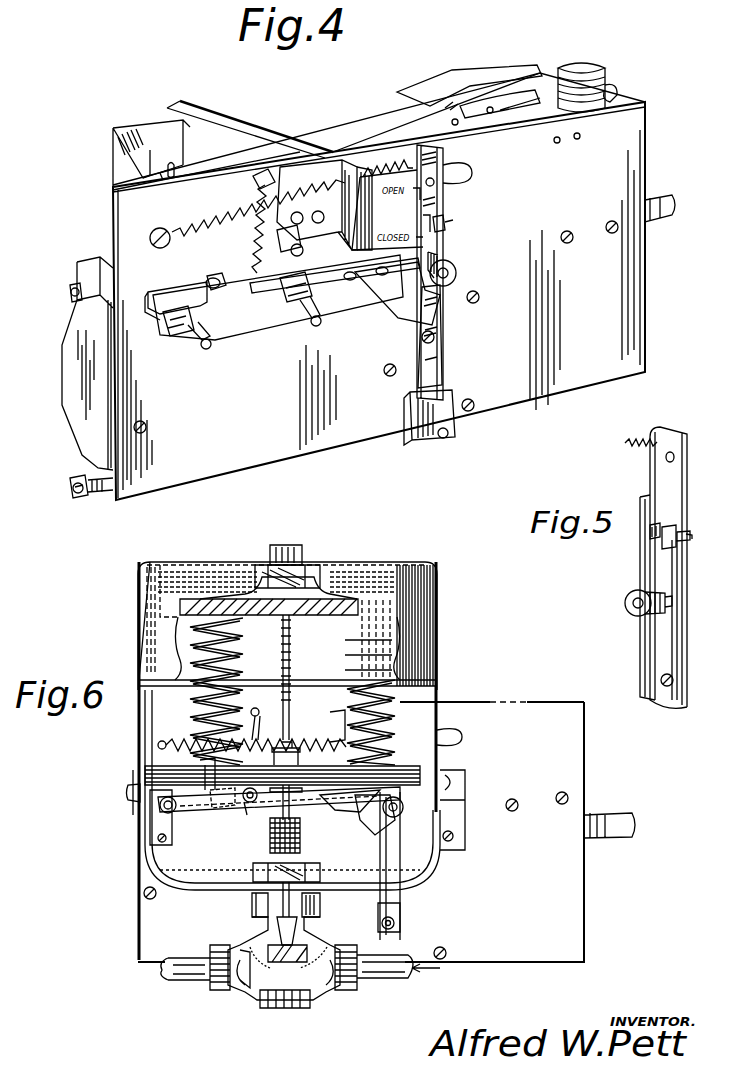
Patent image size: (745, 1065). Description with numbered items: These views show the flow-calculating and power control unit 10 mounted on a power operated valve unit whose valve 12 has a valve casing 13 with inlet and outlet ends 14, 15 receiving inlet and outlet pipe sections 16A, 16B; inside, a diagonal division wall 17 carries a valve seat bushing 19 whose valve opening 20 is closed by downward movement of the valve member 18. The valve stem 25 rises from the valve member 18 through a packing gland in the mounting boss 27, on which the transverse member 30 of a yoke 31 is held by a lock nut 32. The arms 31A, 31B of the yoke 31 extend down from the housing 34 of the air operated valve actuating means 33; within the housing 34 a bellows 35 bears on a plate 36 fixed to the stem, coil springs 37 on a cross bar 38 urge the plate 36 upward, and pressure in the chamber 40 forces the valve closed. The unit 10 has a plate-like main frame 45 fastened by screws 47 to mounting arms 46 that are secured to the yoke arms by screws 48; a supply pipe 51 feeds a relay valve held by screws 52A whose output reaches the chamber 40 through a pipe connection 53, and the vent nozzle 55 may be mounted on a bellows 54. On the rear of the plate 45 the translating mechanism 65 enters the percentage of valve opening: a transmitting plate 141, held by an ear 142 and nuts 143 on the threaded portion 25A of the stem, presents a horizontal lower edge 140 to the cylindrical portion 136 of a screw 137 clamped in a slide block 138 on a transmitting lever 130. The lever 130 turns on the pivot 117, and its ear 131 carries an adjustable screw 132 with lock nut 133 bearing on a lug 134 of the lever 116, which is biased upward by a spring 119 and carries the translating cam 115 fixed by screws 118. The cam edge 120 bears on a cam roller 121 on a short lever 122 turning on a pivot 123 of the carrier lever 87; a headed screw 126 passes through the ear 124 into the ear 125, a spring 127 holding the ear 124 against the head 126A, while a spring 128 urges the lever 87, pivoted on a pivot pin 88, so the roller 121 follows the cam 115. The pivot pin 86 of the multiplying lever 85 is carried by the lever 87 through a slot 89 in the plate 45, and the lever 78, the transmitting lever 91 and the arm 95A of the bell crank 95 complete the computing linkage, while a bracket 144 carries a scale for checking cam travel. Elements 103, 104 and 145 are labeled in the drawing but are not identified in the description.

In FIG. 4, the flow-calculating and power control unit 10 is at (655, 92).
In FIG. 6, the flow-calculating and power control unit 10 is at (470, 698).
In FIG. 6, the valve 12 is at (233, 938).
In FIG. 6, the valve casing 13 is at (244, 975).
In FIG. 6, the inlet end 14 is at (340, 992).
In FIG. 6, the outlet end 15 is at (218, 992).
In FIG. 6, the inlet section of pipe line 16A is at (395, 980).
In FIG. 6, the outlet section of pipe line 16B is at (182, 982).
In FIG. 6, the division wall 17 is at (325, 946).
In FIG. 6, the valve member 18 is at (317, 935).
In FIG. 6, the valve seat bushing 19 is at (272, 962).
In FIG. 6, the valve opening 20 is at (290, 962).
In FIG. 6, the valve stem 25 is at (300, 890).
In FIG. 6, the threaded portion of valve stem 25A is at (290, 645).
In FIG. 6, the mounting boss 27 is at (252, 905).
In FIG. 6, the transverse member of yoke 30 is at (200, 882).
In FIG. 6, the yoke 31 is at (137, 862).
In FIG. 6, the arm of yoke 31A is at (137, 728).
In FIG. 6, the arm of yoke 31B is at (440, 737).
In FIG. 6, the lock nut 32 is at (302, 865).
In FIG. 6, the valve actuating means 33 is at (432, 556).
In FIG. 6, the housing 34 is at (418, 632).
In FIG. 6, the extensible bellows 35 is at (262, 565).
In FIG. 6, the plate 36 is at (266, 616).
In FIG. 6, the expansive coil springs 37 is at (232, 650).
In FIG. 6, the cross bar 38 is at (155, 768).
In FIG. 6, the chamber 40 is at (285, 585).
In FIG. 4, the main frame 45 is at (625, 295).
In FIG. 6, the main frame 45 is at (573, 752).
In FIG. 6, the mounting arms 46 is at (130, 810).
In FIG. 6, the screws 47 is at (166, 842).
In FIG. 6, the screws 48 is at (126, 794).
In FIG. 4, the supply pipe 51 is at (660, 198).
In FIG. 4, the screws 52A is at (568, 243).
In FIG. 6, the screws 52A is at (514, 811).
In FIG. 6, the pipe connection 53 is at (290, 545).
In FIG. 4, the bellows 54 is at (577, 64).
In FIG. 4, the vent nozzle 55 is at (617, 95).
In FIG. 4, the translating mechanism 65 is at (360, 320).
In FIG. 4, the lever 78 is at (195, 168).
In FIG. 4, the multiplying lever 85 is at (397, 128).
In FIG. 4, the pivot pin 86 is at (434, 183).
In FIG. 5, the pivot pin 86 is at (675, 457).
In FIG. 4, the carrier lever 87 is at (452, 154).
In FIG. 5, the carrier lever 87 is at (672, 475).
In FIG. 6, the carrier lever 87 is at (400, 897).
In FIG. 4, the pivot pin 88 is at (457, 434).
In FIG. 6, the pivot pin 88 is at (397, 922).
In FIG. 4, the slot 89 is at (474, 170).
In FIG. 6, the slot 89 is at (464, 735).
In FIG. 4, the transmitting lever 91 is at (475, 95).
In FIG. 4, the bell crank 95 is at (444, 127).
In FIG. 4, the arm of bell crank 95A is at (497, 103).
In FIG. 4, the box 103 is at (148, 124).
In FIG. 4, the box wall 104 is at (125, 163).
In FIG. 4, the translating cam 115 is at (405, 302).
In FIG. 6, the translating cam 115 is at (368, 822).
In FIG. 4, the lever 116 is at (308, 272).
In FIG. 6, the lever 116 is at (350, 802).
In FIG. 4, the pivot 117 is at (182, 338).
In FIG. 4, the screws 118 is at (387, 270).
In FIG. 4, the spring 119 is at (253, 237).
In FIG. 6, the spring 119 is at (256, 708).
In FIG. 4, the cam edge 120 is at (443, 300).
In FIG. 6, the cam edge 120 is at (385, 818).
In FIG. 4, the cam roller 121 is at (455, 264).
In FIG. 5, the cam roller 121 is at (635, 617).
In FIG. 5, the short lever 122 is at (672, 632).
In FIG. 5, the pivot 123 is at (675, 680).
In FIG. 5, the ear 124 is at (680, 527).
In FIG. 5, the ear 125 is at (645, 542).
In FIG. 5, the headed screw 126 is at (692, 533).
In FIG. 5, the head of screw 126A is at (690, 541).
In FIG. 5, the spring 127 is at (660, 525).
In FIG. 4, the spring 128 is at (202, 225).
In FIG. 5, the spring 128 is at (632, 447).
In FIG. 6, the spring 128 is at (184, 740).
In FIG. 4, the transmitting lever 130 is at (258, 325).
In FIG. 6, the transmitting lever 130 is at (236, 812).
In FIG. 4, the ear 131 is at (222, 300).
In FIG. 6, the ear 131 is at (202, 763).
In FIG. 4, the adjustable screw 132 is at (212, 272).
In FIG. 6, the adjustable screw 132 is at (212, 812).
In FIG. 4, the lock nut 133 is at (206, 282).
In FIG. 6, the lug 134 is at (182, 815).
In FIG. 4, the cylindrical portion 136 is at (300, 308).
In FIG. 4, the screw 137 is at (313, 324).
In FIG. 6, the screw 137 is at (258, 812).
In FIG. 4, the slide block 138 is at (312, 290).
In FIG. 6, the slide block 138 is at (257, 795).
In FIG. 6, the horizontal lower edge 140 is at (296, 800).
In FIG. 6, the transmitting plate 141 is at (340, 755).
In FIG. 6, the ear 142 is at (344, 722).
In FIG. 6, the nuts 143 is at (278, 754).
In FIG. 4, the bracket 144 is at (446, 212).
In FIG. 4, the scale mark 145 is at (424, 215).